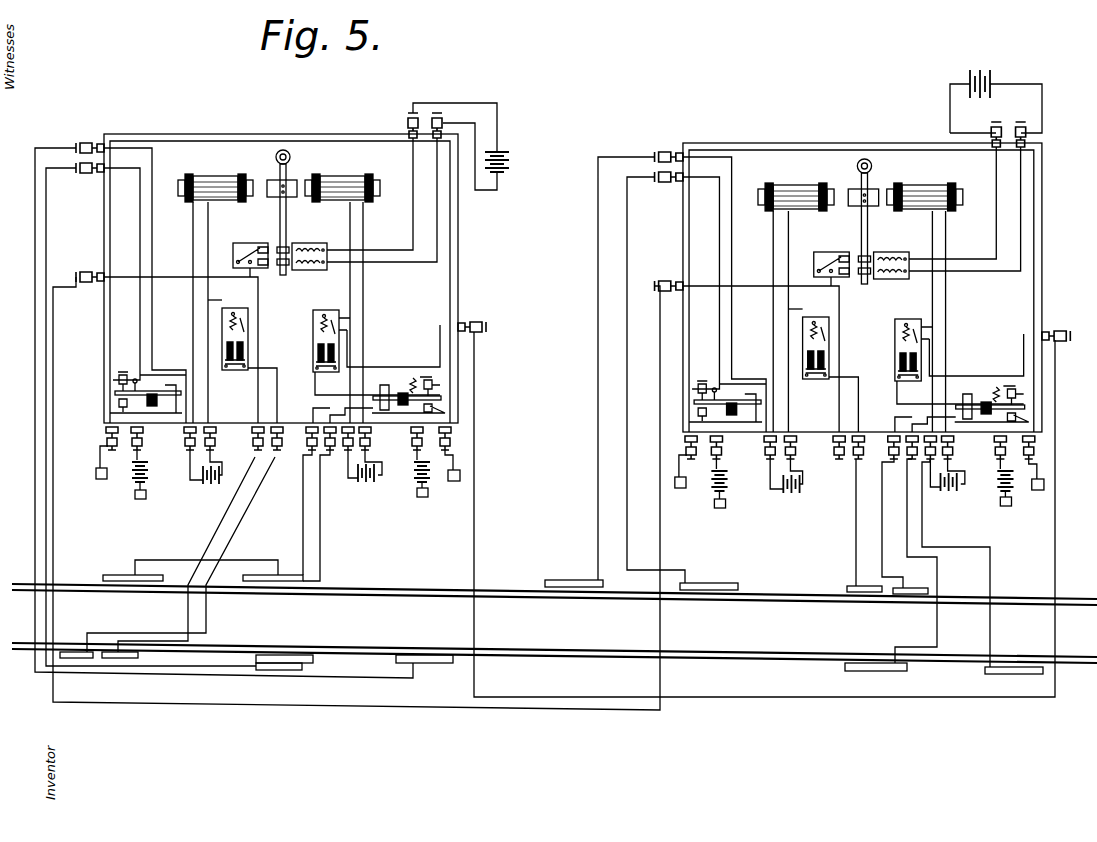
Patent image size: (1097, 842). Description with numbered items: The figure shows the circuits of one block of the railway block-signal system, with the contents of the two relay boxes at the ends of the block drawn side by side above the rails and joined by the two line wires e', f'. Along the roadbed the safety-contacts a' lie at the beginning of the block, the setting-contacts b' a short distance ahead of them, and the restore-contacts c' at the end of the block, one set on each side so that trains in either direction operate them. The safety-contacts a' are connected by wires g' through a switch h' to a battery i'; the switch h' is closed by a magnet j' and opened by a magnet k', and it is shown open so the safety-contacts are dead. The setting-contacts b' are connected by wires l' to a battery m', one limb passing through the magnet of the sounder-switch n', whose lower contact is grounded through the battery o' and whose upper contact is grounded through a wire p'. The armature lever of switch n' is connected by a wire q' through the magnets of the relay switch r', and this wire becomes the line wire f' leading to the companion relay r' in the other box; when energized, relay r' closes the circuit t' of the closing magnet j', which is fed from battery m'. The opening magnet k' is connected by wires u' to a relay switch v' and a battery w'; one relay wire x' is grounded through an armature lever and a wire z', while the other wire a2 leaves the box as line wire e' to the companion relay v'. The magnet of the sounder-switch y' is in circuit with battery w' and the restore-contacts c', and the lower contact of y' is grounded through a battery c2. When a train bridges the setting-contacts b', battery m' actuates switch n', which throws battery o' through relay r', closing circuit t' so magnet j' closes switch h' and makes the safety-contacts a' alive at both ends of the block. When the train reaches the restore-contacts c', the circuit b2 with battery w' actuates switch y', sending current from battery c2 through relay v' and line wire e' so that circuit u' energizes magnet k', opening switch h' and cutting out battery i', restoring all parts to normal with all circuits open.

The circuit wires l is at (627, 478).
The closing magnet j is at (216, 175).
The opening magnet k is at (342, 286).
The switch h is at (275, 205).
The circuit of the closing magnet t is at (208, 300).
The wires u is at (365, 300).
The wire q is at (190, 340).
The relay switch r is at (244, 371).
The relay switch v is at (324, 310).
The wire x is at (315, 380).
The wire a2 is at (418, 367).
The sounder-switch y is at (400, 420).
The wire z is at (460, 470).
The wire p is at (100, 452).
The switch n is at (155, 408).
The battery o is at (135, 466).
The battery m is at (194, 473).
The battery w is at (368, 483).
The battery c2 is at (411, 479).
The battery i is at (510, 150).
The wires g is at (221, 517).
The circuit b2 is at (303, 517).
The restore-contacts c is at (118, 575).
The safety-contacts a is at (75, 652).
The setting-contacts b is at (280, 655).
The line wire e is at (618, 692).
The line wire f is at (53, 326).